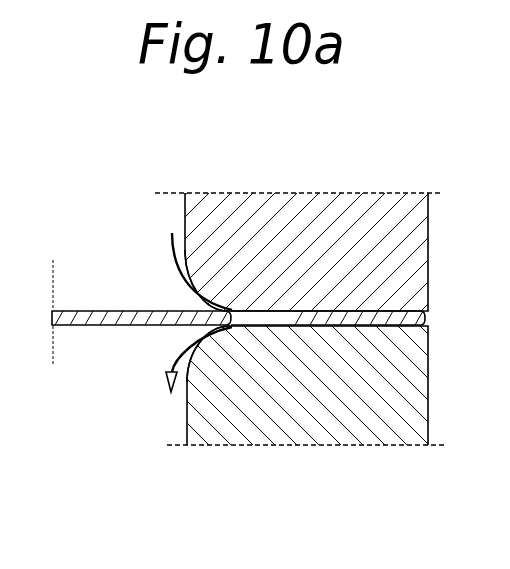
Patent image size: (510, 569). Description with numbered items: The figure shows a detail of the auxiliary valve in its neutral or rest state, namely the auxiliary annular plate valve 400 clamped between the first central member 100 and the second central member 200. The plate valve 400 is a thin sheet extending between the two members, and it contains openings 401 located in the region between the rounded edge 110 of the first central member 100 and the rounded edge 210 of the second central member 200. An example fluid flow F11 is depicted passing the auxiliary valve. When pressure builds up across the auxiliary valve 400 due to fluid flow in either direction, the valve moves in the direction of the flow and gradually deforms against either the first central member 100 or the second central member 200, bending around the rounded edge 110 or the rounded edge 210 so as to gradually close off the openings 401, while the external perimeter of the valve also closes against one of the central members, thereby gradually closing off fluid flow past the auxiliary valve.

The first central member 100 is at (317, 213).
The rounded edge 110 is at (205, 283).
The second central member 200 is at (320, 427).
The rounded edge 210 is at (212, 350).
The auxiliary annular plate valve 400 is at (145, 317).
The openings 401 is at (260, 317).
The fluid flow F11 is at (171, 368).